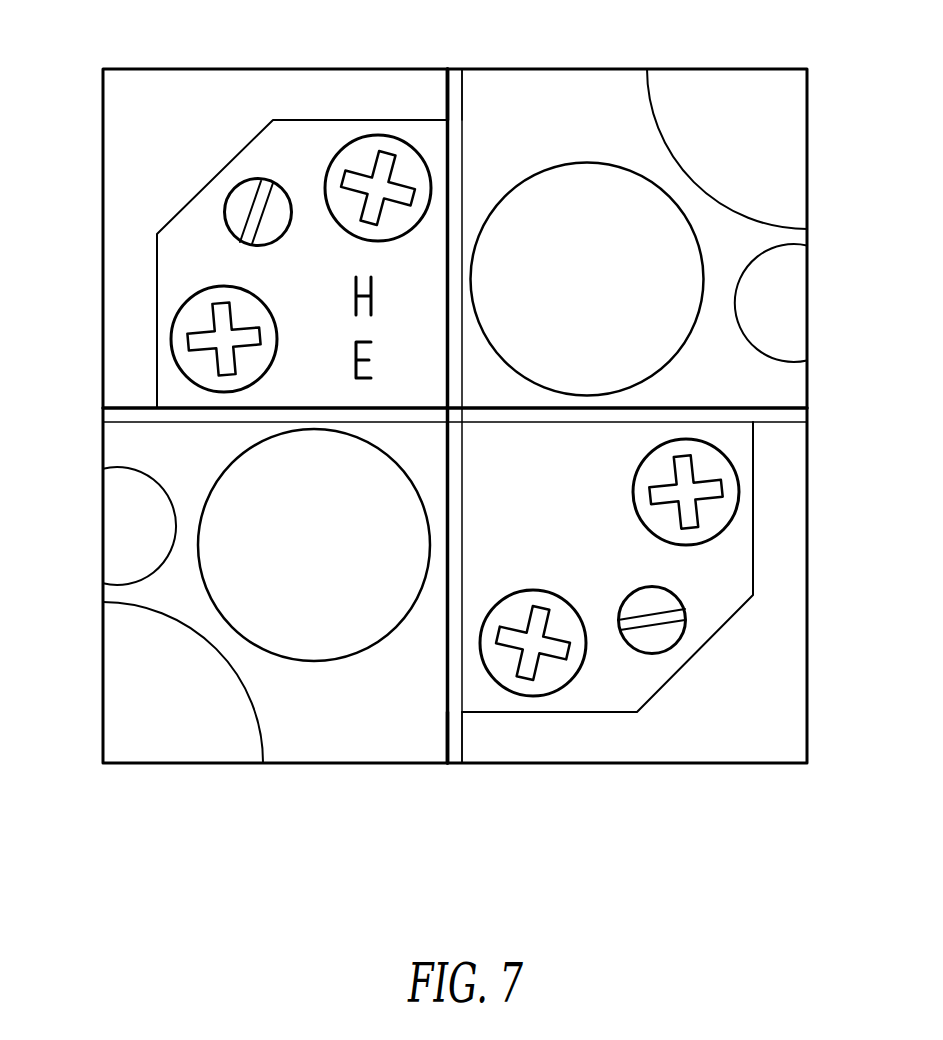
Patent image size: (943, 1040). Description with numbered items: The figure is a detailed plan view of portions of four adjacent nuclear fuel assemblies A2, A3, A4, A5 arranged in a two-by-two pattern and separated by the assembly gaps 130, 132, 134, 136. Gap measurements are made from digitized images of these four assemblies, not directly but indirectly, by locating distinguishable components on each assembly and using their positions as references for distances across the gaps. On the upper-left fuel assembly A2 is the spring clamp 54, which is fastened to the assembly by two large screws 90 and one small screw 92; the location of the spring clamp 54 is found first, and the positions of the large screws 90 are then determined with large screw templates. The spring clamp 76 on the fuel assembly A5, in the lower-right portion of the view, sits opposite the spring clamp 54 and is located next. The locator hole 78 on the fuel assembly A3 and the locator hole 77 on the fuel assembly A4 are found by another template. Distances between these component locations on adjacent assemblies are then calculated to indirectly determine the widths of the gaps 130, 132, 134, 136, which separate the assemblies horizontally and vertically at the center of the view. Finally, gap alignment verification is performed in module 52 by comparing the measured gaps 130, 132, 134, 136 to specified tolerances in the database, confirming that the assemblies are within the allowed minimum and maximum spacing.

The module 52 is at (455, 416).
The spring clamp 54 is at (290, 119).
The spring clamp 76 is at (676, 677).
The locator hole 77 is at (325, 661).
The locator hole 78 is at (563, 163).
The large screw 90 is at (347, 232).
The small screw 92 is at (232, 231).
The assembly gap 130 is at (122, 414).
The assembly gap 132 is at (455, 395).
The assembly gap 134 is at (788, 417).
The assembly gap 136 is at (455, 507).
The fuel assembly A2 is at (445, 87).
The fuel assembly A3 is at (463, 87).
The fuel assembly A4 is at (446, 740).
The fuel assembly A5 is at (463, 742).